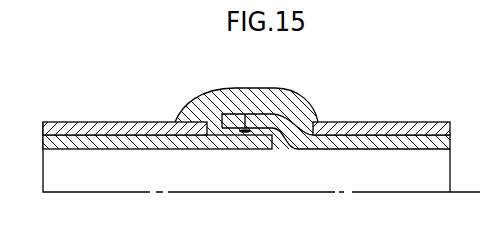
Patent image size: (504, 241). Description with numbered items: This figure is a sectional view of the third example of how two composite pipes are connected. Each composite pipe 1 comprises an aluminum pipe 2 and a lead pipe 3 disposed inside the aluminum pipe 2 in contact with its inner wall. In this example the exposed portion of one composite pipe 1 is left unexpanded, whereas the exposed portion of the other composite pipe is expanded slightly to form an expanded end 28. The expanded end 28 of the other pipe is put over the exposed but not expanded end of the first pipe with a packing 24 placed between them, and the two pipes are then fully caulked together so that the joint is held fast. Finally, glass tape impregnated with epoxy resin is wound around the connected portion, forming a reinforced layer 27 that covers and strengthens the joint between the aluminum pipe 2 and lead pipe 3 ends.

The composite pipe 1 is at (252, 140).
The aluminum pipe 2 is at (427, 130).
The lead pipe 3 is at (388, 140).
The packing 24 is at (232, 92).
The reinforced layer 27 is at (183, 110).
The expanded end 28 is at (272, 114).